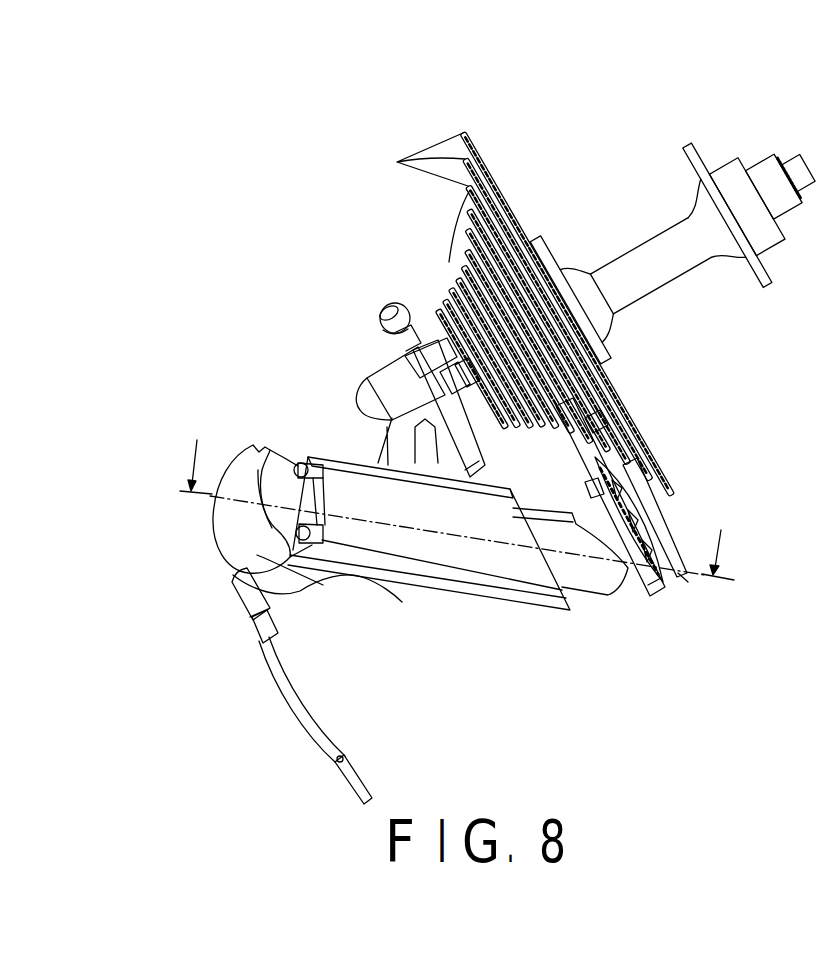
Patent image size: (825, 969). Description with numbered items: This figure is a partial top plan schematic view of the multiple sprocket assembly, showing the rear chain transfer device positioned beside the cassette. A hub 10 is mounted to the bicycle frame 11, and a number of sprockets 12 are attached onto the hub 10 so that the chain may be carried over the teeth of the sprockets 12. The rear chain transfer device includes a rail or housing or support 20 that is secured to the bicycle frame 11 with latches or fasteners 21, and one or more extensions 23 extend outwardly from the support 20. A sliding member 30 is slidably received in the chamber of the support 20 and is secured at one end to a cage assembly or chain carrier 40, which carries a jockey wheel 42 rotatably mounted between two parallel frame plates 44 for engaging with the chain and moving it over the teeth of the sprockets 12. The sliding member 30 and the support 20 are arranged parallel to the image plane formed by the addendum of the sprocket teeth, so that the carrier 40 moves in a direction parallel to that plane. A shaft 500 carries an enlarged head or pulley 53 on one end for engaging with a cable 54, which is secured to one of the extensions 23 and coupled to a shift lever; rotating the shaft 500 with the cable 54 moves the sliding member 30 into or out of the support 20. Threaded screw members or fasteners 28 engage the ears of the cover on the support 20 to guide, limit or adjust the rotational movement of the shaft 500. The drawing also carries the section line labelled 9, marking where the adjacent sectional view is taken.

The hub 10 is at (771, 156).
The sprockets 12 is at (515, 342).
The bicycle frame 11 is at (390, 347).
The fasteners 21 is at (362, 407).
The section line 9- 9 is at (453, 510).
The pulley 53 is at (228, 533).
The fasteners 28 is at (325, 474).
The extensions 23 is at (298, 593).
The shaft 500 is at (243, 577).
The cable 54 is at (357, 780).
The support 20 is at (495, 603).
The sliding member 30 is at (600, 603).
The frame plates 44 is at (680, 582).
The carrier 40 is at (674, 528).
The jockey wheel 42 is at (670, 583).